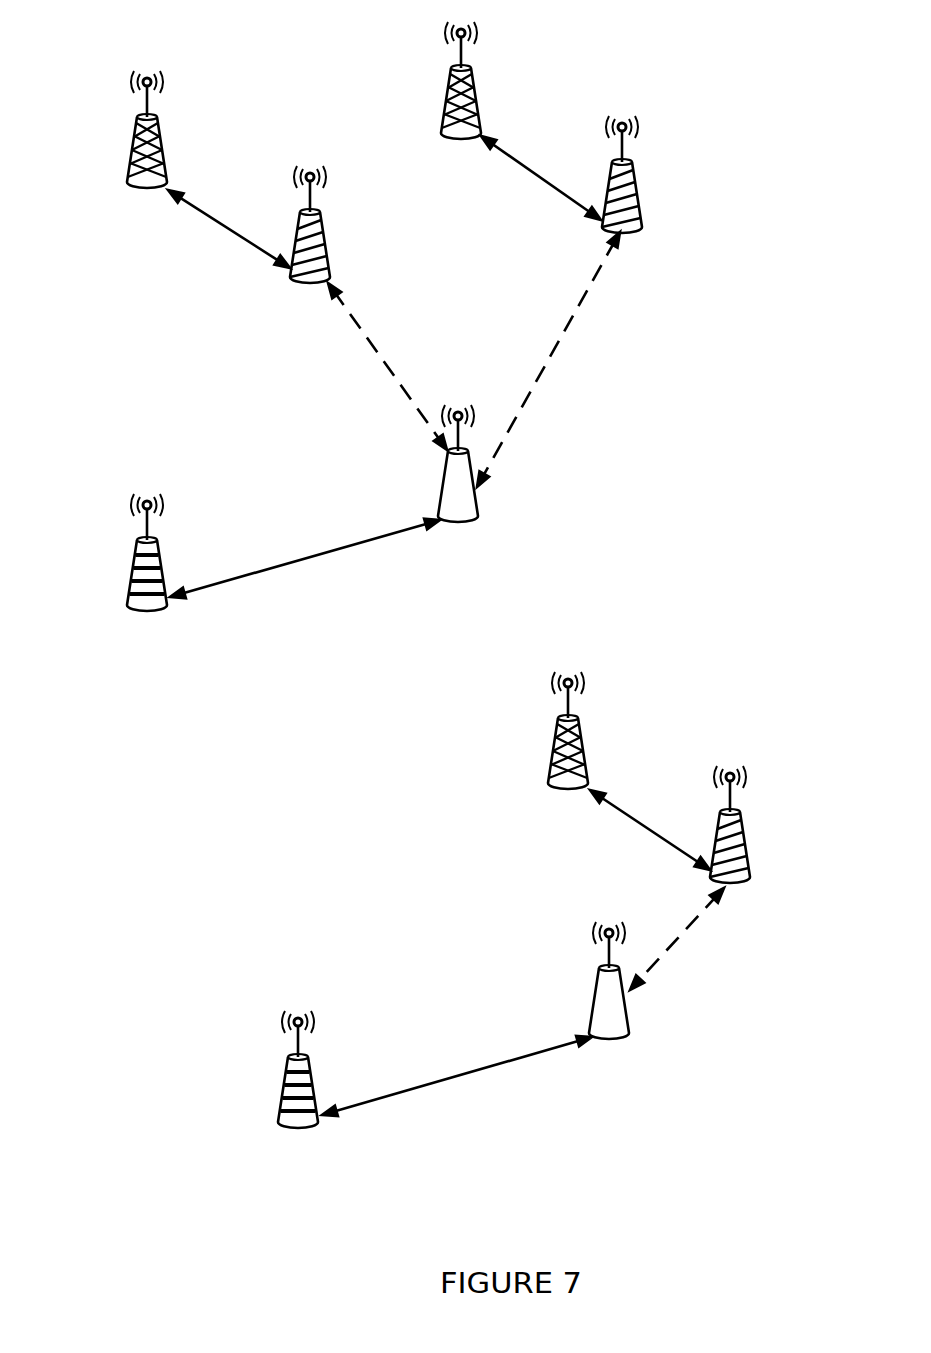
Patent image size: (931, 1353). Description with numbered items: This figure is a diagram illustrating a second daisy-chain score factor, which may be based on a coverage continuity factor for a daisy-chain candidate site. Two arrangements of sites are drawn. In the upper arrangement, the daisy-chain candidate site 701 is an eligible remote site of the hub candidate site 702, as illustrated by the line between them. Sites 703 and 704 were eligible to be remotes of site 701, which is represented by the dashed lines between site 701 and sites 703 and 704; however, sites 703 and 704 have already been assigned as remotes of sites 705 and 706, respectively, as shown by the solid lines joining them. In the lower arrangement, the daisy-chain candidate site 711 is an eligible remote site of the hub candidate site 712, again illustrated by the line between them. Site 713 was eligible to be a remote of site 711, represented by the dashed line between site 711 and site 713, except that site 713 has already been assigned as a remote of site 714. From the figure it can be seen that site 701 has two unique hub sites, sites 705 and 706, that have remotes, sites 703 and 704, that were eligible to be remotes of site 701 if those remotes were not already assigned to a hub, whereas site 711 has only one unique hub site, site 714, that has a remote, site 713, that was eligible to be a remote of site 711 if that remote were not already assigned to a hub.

The daisy-chain candidate site 701 is at (447, 459).
The hub candidate site 702 is at (133, 556).
The site 703 is at (333, 250).
The site 704 is at (645, 201).
The site 705 is at (171, 156).
The site 706 is at (485, 106).
The daisy-chain candidate site 711 is at (598, 975).
The hub candidate site 712 is at (284, 1074).
The site 713 is at (753, 853).
The site 714 is at (591, 757).